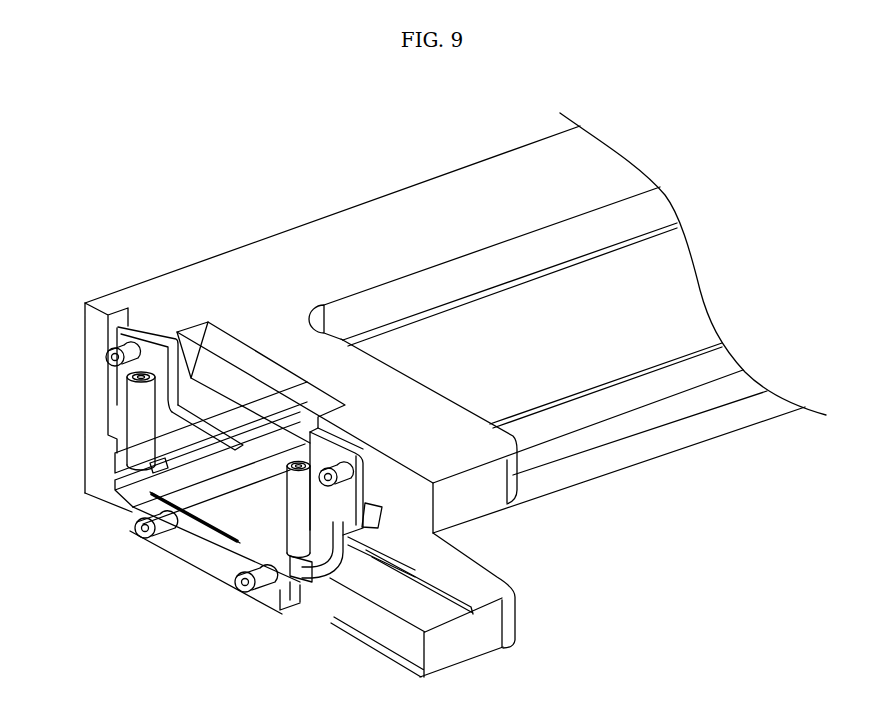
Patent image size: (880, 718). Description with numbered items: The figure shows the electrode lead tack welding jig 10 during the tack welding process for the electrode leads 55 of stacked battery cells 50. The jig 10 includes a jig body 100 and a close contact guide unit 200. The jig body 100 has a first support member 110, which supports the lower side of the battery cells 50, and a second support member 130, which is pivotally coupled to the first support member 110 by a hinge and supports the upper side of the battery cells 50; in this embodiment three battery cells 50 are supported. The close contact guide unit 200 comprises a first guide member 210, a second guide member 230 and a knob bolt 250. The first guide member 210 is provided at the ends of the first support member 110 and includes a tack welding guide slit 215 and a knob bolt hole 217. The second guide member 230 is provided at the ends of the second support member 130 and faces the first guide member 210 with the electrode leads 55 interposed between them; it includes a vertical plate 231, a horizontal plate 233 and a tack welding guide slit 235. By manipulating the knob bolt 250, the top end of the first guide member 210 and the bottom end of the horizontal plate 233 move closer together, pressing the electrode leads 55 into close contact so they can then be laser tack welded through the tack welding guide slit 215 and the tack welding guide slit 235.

The electrode lead tack welding jig 10 is at (274, 153).
The jig body 100 is at (397, 186).
The second support member 130 is at (503, 172).
The battery cell 50 is at (675, 410).
The first support member 110 is at (490, 635).
The close contact guide unit 200 is at (200, 388).
The second guide member 230 is at (109, 379).
The knob bolt 250 is at (123, 428).
The first guide member 210 is at (226, 590).
The electrode lead 55 is at (187, 527).
The tack welding guide slit 235 is at (150, 494).
The tack welding guide slit 215 is at (230, 557).
The horizontal plate 233 is at (316, 568).
The knob bolt hole 217 is at (287, 594).
The vertical plate 231 is at (345, 508).